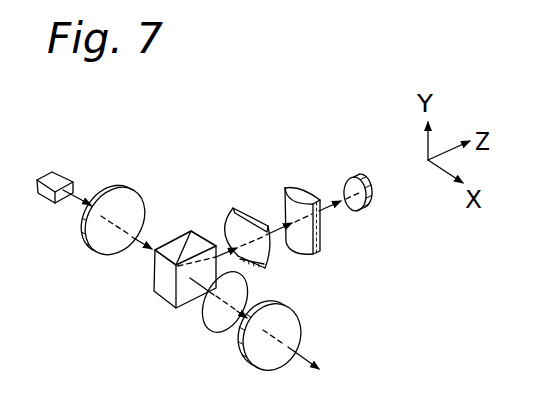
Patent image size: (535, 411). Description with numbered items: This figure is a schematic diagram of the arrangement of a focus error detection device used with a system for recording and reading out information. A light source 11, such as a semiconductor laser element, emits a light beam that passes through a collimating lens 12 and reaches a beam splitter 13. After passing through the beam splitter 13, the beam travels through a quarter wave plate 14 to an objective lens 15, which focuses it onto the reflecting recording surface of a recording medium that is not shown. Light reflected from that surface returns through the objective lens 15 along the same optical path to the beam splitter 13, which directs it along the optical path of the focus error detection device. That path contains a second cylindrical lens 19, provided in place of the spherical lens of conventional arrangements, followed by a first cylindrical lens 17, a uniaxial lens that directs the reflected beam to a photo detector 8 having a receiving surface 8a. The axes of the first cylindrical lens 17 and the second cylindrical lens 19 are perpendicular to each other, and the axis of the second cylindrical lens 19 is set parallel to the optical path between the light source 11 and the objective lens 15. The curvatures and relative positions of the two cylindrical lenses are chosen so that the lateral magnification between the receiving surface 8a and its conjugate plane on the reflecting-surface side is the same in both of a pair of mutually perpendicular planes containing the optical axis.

The light source 11 is at (64, 173).
The collimating lens 12 is at (133, 194).
The beam splitter 13 is at (161, 293).
The quarter wave plate 14 is at (213, 331).
The objective lens 15 is at (249, 365).
The first cylindrical lens 17 is at (291, 189).
The second cylindrical lens 19 is at (230, 209).
The receiving surface 8a is at (356, 178).
The photo detector 8 is at (373, 199).